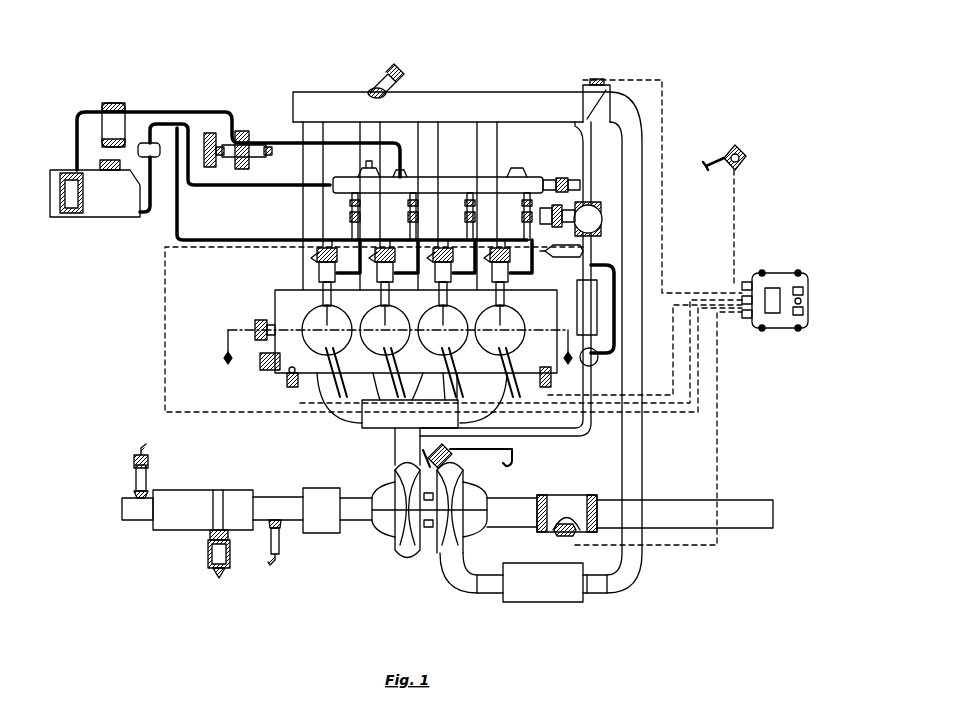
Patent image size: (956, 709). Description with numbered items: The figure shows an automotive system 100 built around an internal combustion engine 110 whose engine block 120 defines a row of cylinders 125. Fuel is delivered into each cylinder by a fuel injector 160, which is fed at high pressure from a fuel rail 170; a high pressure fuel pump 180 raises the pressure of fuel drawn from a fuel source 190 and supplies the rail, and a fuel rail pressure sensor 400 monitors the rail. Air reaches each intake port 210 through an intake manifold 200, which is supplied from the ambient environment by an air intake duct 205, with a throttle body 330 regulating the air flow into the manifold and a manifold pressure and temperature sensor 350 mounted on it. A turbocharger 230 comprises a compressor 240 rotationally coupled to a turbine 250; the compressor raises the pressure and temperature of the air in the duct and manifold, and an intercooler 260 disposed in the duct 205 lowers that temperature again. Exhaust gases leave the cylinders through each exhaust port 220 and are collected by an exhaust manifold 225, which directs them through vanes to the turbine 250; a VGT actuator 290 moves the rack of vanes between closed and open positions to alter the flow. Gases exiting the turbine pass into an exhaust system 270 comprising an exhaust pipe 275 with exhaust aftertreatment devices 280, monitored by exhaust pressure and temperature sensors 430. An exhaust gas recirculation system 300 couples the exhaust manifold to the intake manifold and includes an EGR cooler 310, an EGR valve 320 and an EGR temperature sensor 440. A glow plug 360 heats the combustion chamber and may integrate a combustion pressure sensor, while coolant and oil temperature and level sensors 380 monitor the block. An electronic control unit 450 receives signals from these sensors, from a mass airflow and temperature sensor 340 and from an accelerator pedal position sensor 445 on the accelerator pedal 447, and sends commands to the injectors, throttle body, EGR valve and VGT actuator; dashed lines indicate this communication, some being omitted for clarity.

The automotive system 100 is at (212, 77).
The internal combustion engine 110 is at (509, 80).
The engine block 120 is at (274, 293).
The cylinder 125 is at (521, 306).
The fuel injector 160 is at (317, 272).
The fuel rail 170 is at (352, 187).
The high pressure fuel pump 180 is at (253, 132).
The fuel source 190 is at (118, 210).
The intake manifold 200 is at (433, 105).
The air intake duct 205 is at (744, 516).
The intake port 210 is at (308, 291).
The exhaust port 220 is at (316, 378).
The exhaust manifold 225 is at (352, 499).
The turbocharger 230 is at (402, 570).
The compressor 240 is at (453, 537).
The turbine 250 is at (405, 537).
The intercooler 260 is at (566, 591).
The exhaust system 270 is at (216, 482).
The exhaust pipe 275 is at (133, 510).
The exhaust aftertreatment device 280 is at (322, 514).
The VGT actuator 290 is at (462, 461).
The exhaust gas recirculation system 300 is at (576, 491).
The EGR cooler 310 is at (588, 322).
The EGR valve 320 is at (594, 200).
The throttle body 330 is at (591, 80).
The mass airflow and temperature sensor 340 is at (560, 529).
The manifold pressure and temperature sensor 350 is at (378, 80).
The glow plug 360 is at (383, 418).
The coolant and oil temperature and level sensors 380 is at (261, 341).
The fuel rail pressure sensor 400 is at (589, 118).
The exhaust pressure and temperature sensors 430 is at (221, 572).
The EGR temperature sensor 440 is at (590, 247).
The accelerator pedal position sensor 445 is at (742, 148).
The accelerator pedal 447 is at (715, 152).
The electronic control unit 450 is at (778, 272).